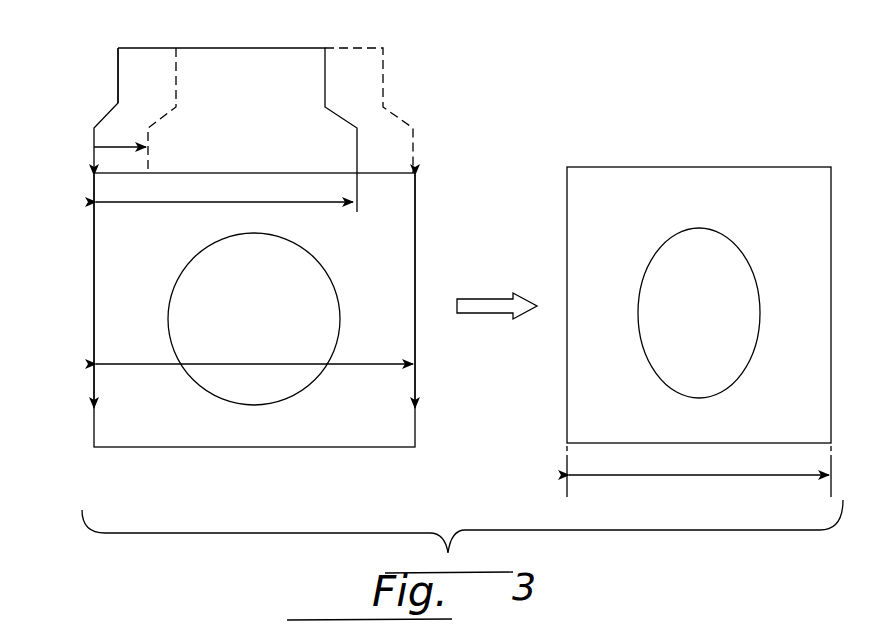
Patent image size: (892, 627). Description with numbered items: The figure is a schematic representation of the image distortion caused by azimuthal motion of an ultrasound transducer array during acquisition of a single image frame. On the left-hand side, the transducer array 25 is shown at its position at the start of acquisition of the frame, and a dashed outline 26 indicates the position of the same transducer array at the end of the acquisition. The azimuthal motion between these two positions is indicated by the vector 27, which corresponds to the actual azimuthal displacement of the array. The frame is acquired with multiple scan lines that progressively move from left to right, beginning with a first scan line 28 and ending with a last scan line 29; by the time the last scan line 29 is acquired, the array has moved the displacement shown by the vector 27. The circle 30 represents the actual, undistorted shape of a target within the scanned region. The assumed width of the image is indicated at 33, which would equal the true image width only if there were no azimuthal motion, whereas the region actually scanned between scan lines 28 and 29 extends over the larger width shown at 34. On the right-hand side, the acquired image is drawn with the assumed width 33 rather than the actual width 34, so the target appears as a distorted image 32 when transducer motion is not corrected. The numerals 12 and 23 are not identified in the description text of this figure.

The blank 12 is at (254, 223).
The neck width 23 is at (184, 203).
The transducer array 25 is at (116, 64).
The transducer array position 26 is at (182, 58).
The vector 27 is at (117, 146).
The first scan line 28 is at (94, 308).
The last scan line 29 is at (415, 222).
The target 30 is at (173, 290).
The distorted image 32 is at (735, 248).
The assumed width of the image 33 is at (686, 475).
The actual scanned width 34 is at (166, 364).